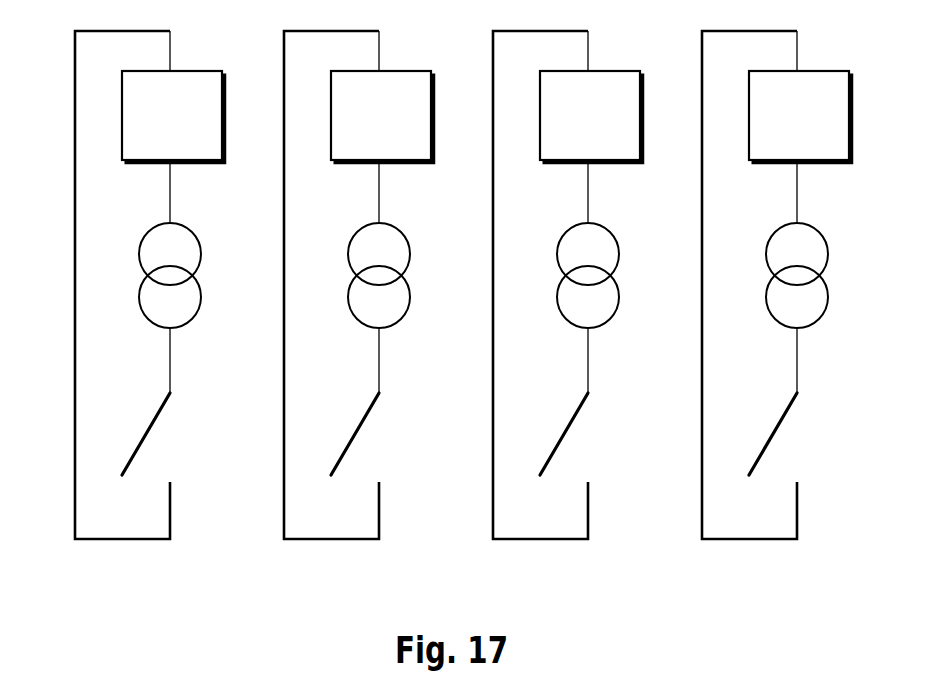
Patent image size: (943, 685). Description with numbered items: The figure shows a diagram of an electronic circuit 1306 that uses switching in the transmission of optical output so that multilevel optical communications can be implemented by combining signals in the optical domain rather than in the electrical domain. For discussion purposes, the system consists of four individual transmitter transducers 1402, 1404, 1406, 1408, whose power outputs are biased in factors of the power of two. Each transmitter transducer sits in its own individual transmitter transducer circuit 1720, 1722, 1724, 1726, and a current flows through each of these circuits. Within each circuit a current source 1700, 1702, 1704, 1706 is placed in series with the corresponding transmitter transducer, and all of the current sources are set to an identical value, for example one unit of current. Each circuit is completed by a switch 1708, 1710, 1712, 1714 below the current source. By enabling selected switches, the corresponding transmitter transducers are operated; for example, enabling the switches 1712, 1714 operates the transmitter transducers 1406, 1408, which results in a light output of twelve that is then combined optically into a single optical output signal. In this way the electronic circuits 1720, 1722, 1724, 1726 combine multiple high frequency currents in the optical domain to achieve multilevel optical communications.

The electronic circuit 1306 is at (469, 339).
The transmitter transducer 1402 is at (205, 130).
The transmitter transducer 1404 is at (382, 117).
The transmitter transducer 1406 is at (591, 117).
The transmitter transducer 1408 is at (800, 117).
The current source 1700 is at (204, 275).
The current source 1702 is at (413, 275).
The current source 1704 is at (622, 275).
The current source 1706 is at (831, 275).
The switch 1708 is at (177, 434).
The switch 1710 is at (386, 434).
The switch 1712 is at (595, 434).
The switch 1714 is at (804, 434).
The transmitter transducer circuit 1720 is at (147, 540).
The transmitter transducer circuit 1722 is at (315, 319).
The transmitter transducer circuit 1724 is at (524, 319).
The transmitter transducer circuit 1726 is at (733, 319).